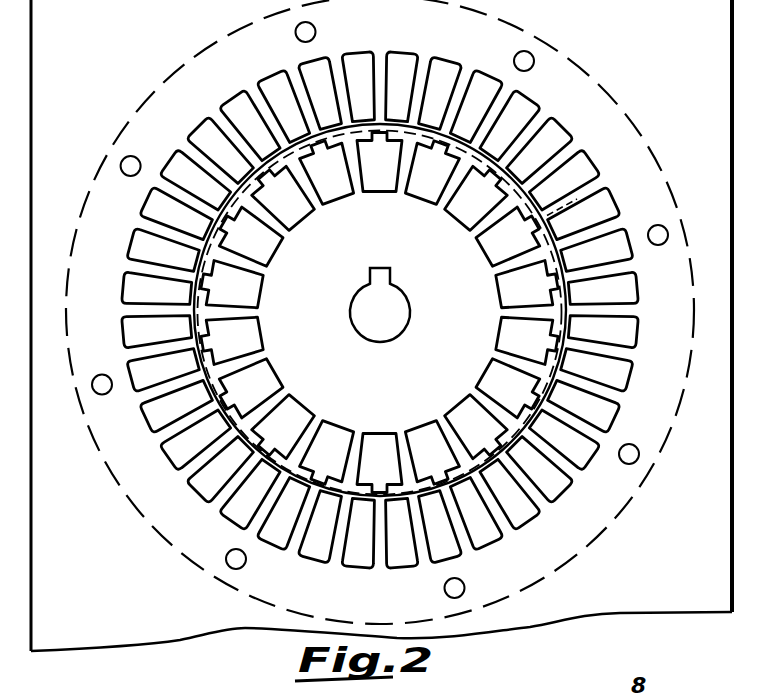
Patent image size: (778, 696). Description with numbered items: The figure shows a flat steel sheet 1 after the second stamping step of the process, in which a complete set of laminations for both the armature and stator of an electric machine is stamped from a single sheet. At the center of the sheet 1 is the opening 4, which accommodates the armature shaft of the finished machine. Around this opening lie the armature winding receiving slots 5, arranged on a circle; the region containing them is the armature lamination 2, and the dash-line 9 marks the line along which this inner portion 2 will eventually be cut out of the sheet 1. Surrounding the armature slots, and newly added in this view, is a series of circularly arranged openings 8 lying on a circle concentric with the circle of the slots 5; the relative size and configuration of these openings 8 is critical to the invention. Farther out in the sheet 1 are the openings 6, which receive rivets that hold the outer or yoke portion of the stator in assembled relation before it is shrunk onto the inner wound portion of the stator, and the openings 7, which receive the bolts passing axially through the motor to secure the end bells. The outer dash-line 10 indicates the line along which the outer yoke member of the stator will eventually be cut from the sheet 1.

The sheet 1 is at (708, 598).
The armature lamination 2 is at (342, 338).
The opening 4 is at (405, 303).
The armature winding receiving slots 5 is at (503, 183).
The rivet openings 6 is at (659, 245).
The bolt openings 7 is at (311, 0).
The circularly arranged openings 8 is at (585, 172).
The dash-line 9 is at (578, 199).
The dash-line 10 is at (602, 86).